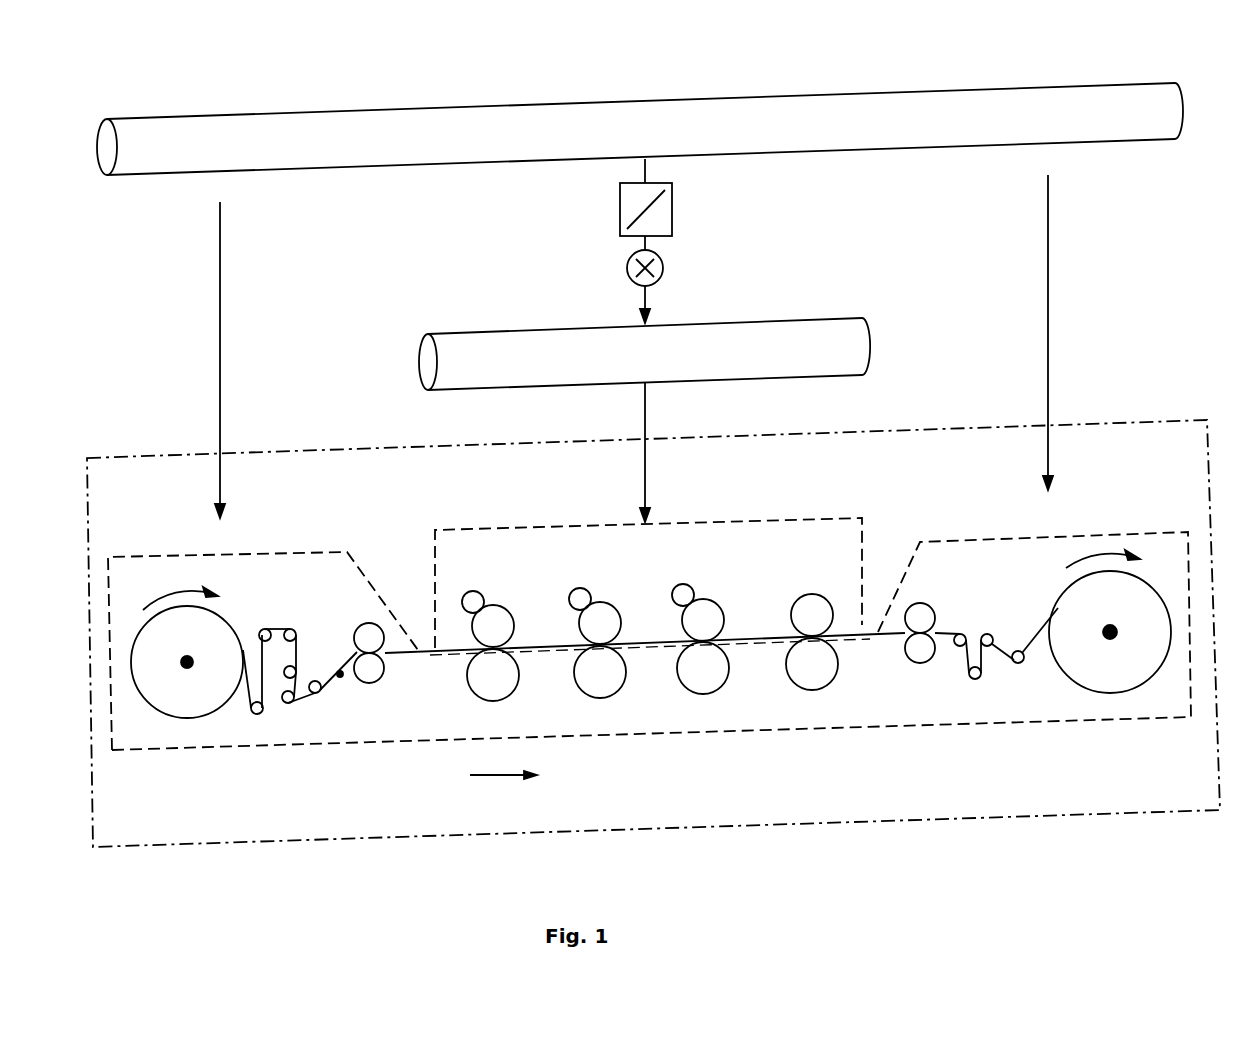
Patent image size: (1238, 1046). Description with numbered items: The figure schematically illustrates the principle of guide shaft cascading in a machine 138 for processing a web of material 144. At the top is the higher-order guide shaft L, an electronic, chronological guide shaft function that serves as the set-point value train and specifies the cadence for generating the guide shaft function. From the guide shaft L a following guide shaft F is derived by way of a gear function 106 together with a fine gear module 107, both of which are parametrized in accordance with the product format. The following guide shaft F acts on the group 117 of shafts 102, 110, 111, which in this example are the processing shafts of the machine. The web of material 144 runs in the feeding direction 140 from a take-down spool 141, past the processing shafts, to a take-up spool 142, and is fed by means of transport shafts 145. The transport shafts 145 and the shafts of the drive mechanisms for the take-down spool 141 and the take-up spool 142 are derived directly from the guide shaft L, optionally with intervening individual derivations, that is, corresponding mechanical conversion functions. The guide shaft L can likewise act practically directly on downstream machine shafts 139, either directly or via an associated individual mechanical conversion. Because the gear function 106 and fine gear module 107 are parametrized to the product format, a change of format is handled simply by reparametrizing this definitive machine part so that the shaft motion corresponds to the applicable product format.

The higher-order guide shaft L is at (903, 138).
The following guide shaft F is at (862, 352).
The gear function 106 is at (663, 224).
The fine gear module 107 is at (667, 268).
The machine 138 is at (1122, 433).
The downstream machine shafts 139 is at (280, 553).
The group of shafts 117 is at (825, 518).
The processing shaft 102 is at (492, 602).
The processing shaft 110 is at (600, 593).
The processing shaft 111 is at (795, 598).
The transport shafts 145 is at (807, 680).
The feeding direction 140 is at (479, 775).
The take-down spool 141 is at (185, 703).
The take-up spool 142 is at (1105, 683).
The web of material 144 is at (340, 675).